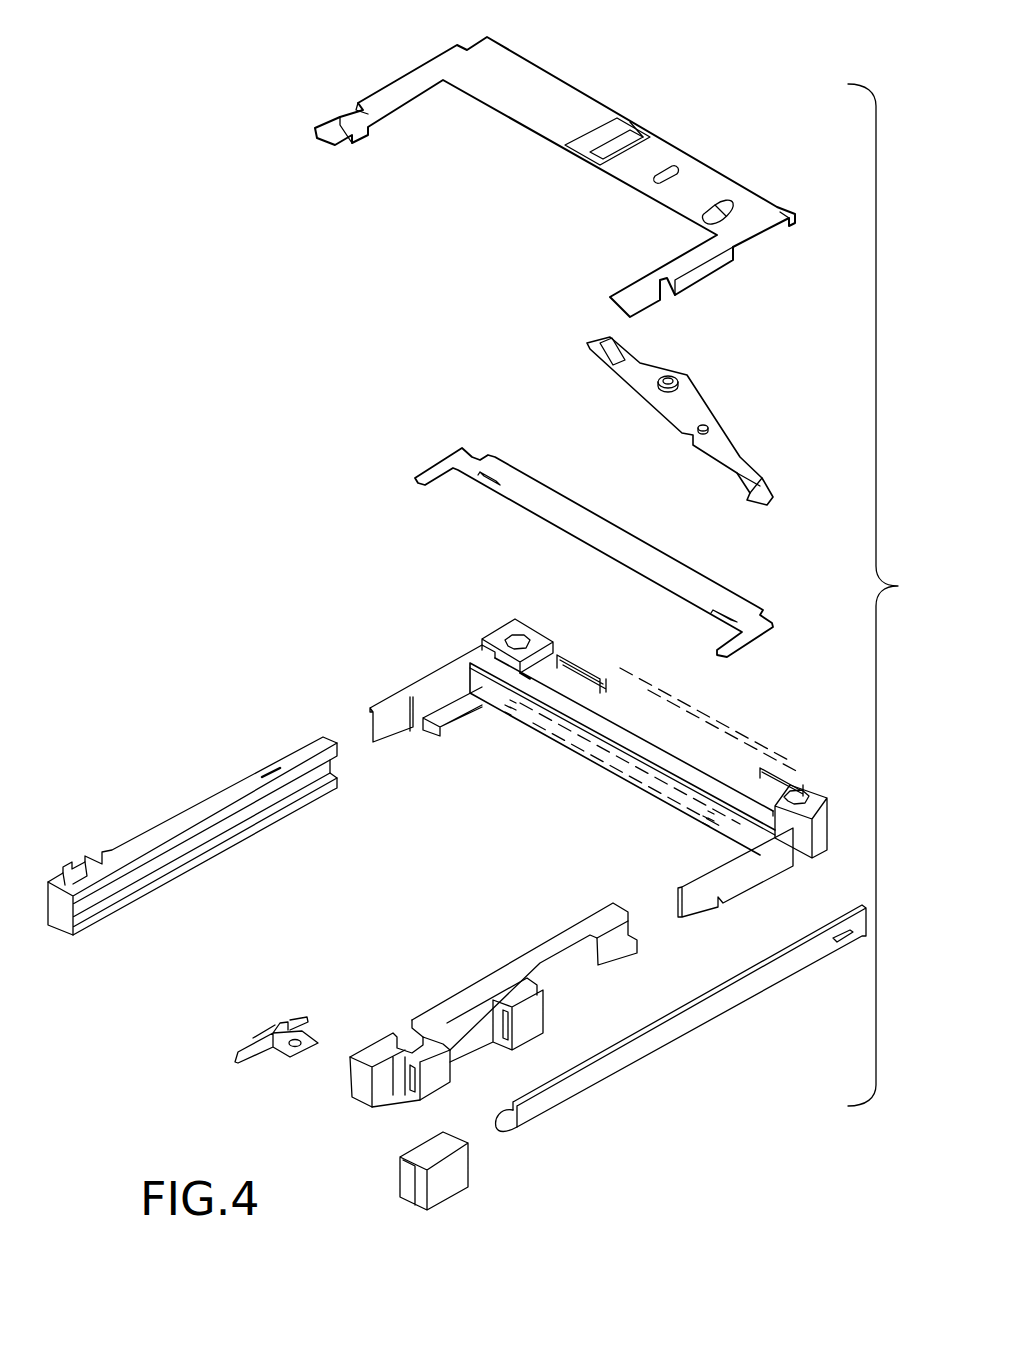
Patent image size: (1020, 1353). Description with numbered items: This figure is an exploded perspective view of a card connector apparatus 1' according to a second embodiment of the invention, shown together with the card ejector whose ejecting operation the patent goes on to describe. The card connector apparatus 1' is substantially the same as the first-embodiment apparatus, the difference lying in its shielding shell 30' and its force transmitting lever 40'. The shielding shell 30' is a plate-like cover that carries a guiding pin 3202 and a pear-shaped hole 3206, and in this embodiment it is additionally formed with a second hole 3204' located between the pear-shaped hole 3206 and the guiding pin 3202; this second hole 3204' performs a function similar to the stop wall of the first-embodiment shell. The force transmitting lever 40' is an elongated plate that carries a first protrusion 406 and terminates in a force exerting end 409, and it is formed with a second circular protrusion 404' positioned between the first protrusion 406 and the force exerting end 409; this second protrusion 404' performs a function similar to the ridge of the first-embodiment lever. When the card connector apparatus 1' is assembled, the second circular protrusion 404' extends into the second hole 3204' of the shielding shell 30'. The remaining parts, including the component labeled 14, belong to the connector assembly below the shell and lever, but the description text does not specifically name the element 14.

The card connector apparatus 1' is at (166, 170).
The shielding shell 30' is at (575, 171).
The guiding pin 3202 is at (600, 142).
The second hole 3204' is at (731, 140).
The pear-shaped hole 3206 is at (720, 200).
The force transmitting lever 40' is at (647, 408).
The second circular protrusion 404' is at (720, 351).
The first protrusion 406 is at (707, 425).
The force exerting end 409 is at (587, 343).
The housing 14 is at (593, 653).